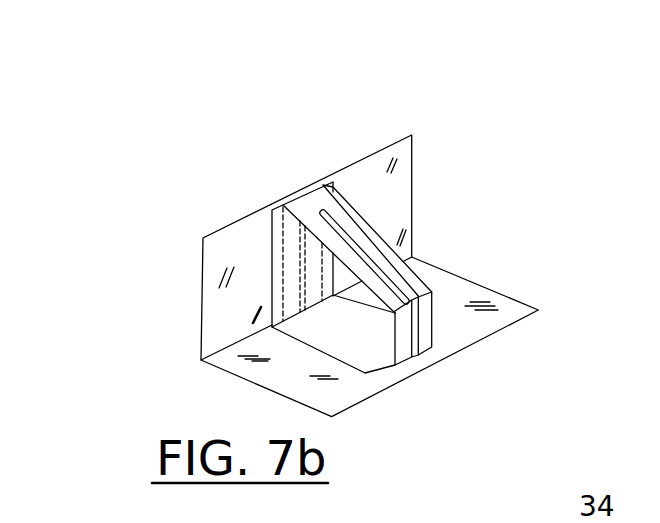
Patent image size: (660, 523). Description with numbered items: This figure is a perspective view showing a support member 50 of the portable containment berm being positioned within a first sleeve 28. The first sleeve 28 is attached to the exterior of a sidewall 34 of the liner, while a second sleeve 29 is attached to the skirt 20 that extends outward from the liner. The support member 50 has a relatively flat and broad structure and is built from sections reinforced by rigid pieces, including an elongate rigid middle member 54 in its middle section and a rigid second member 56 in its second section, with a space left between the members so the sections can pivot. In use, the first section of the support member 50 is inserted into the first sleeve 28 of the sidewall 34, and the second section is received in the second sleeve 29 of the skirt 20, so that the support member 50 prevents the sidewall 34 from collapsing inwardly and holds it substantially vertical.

The sidewall 34 is at (363, 172).
The skirt 20 is at (513, 308).
The first sleeve 28 is at (282, 254).
The second sleeve 29 is at (352, 358).
The support member 50 is at (386, 218).
The middle member 54 is at (397, 287).
The second member 56 is at (422, 332).